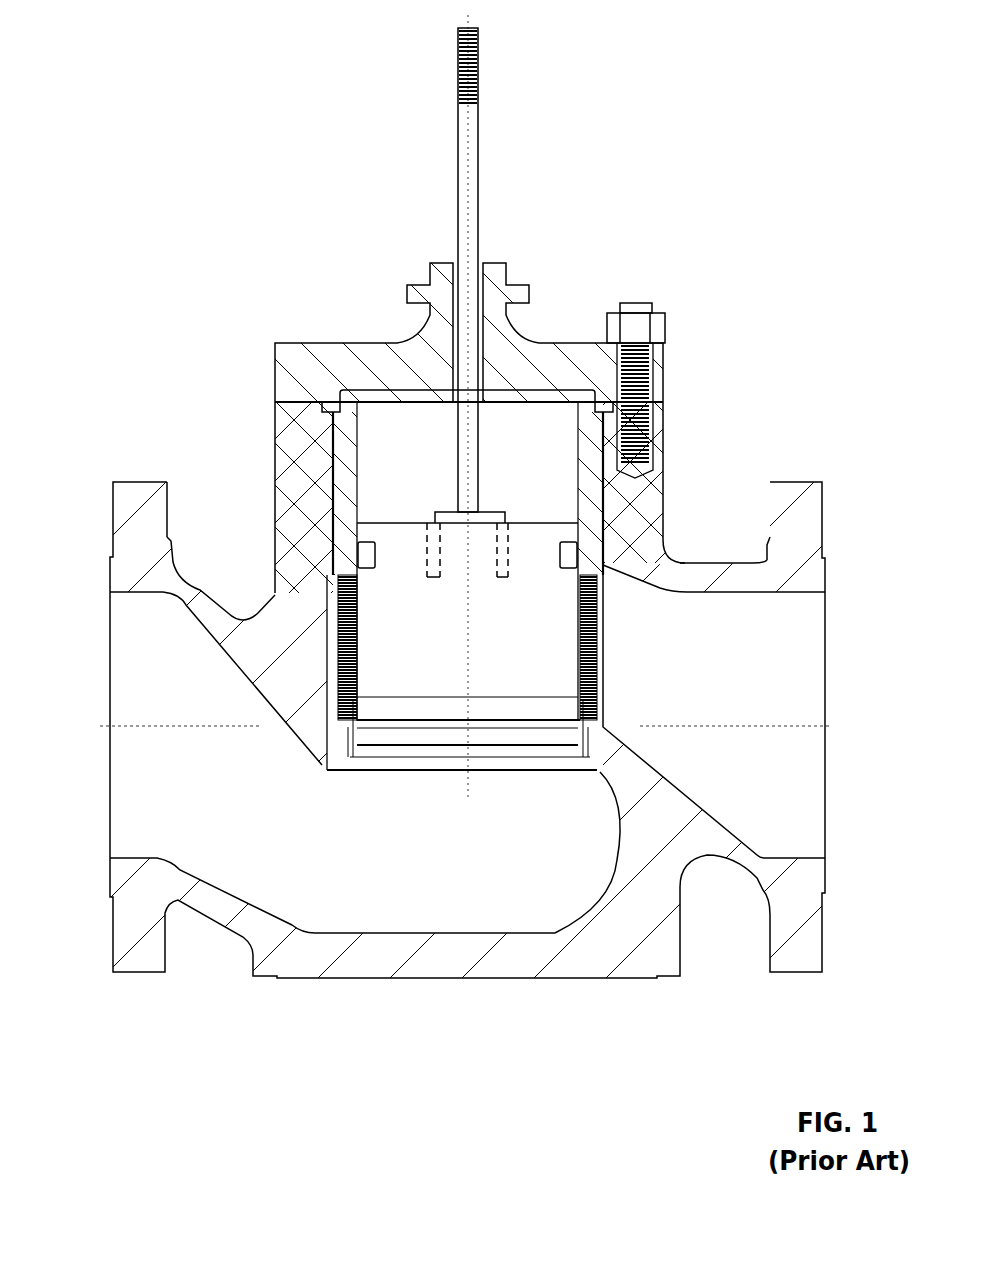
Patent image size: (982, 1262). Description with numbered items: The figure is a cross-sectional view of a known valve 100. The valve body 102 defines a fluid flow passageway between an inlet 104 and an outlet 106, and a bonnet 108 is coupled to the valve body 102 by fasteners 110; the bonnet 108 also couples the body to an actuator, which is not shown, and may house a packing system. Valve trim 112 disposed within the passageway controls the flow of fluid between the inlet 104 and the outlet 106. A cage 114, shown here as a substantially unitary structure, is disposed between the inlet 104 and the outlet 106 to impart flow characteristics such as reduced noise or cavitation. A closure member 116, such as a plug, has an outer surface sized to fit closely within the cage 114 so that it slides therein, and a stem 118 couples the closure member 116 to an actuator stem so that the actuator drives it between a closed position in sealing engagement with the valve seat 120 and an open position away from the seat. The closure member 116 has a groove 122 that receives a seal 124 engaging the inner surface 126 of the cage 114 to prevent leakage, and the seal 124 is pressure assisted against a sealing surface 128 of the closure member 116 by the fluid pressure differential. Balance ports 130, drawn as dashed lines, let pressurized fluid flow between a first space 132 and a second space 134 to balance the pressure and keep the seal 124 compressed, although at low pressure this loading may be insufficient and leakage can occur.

The valve 100 is at (292, 150).
The valve body 102 is at (610, 978).
The inlet 104 is at (825, 660).
The outlet 106 is at (110, 672).
The bonnet 108 is at (316, 343).
The fasteners 110 is at (636, 300).
The valve trim 112 is at (303, 534).
The cage 114 is at (350, 500).
The closure member 116 is at (413, 484).
The stem 118 is at (479, 212).
The valve seat 120 is at (566, 772).
The groove 122 is at (378, 552).
The seal 124 is at (558, 553).
The inner surface 126 is at (578, 476).
The sealing surface 128 is at (549, 524).
The balance ports 130 is at (496, 590).
The first space 132 is at (427, 441).
The second space 134 is at (340, 839).